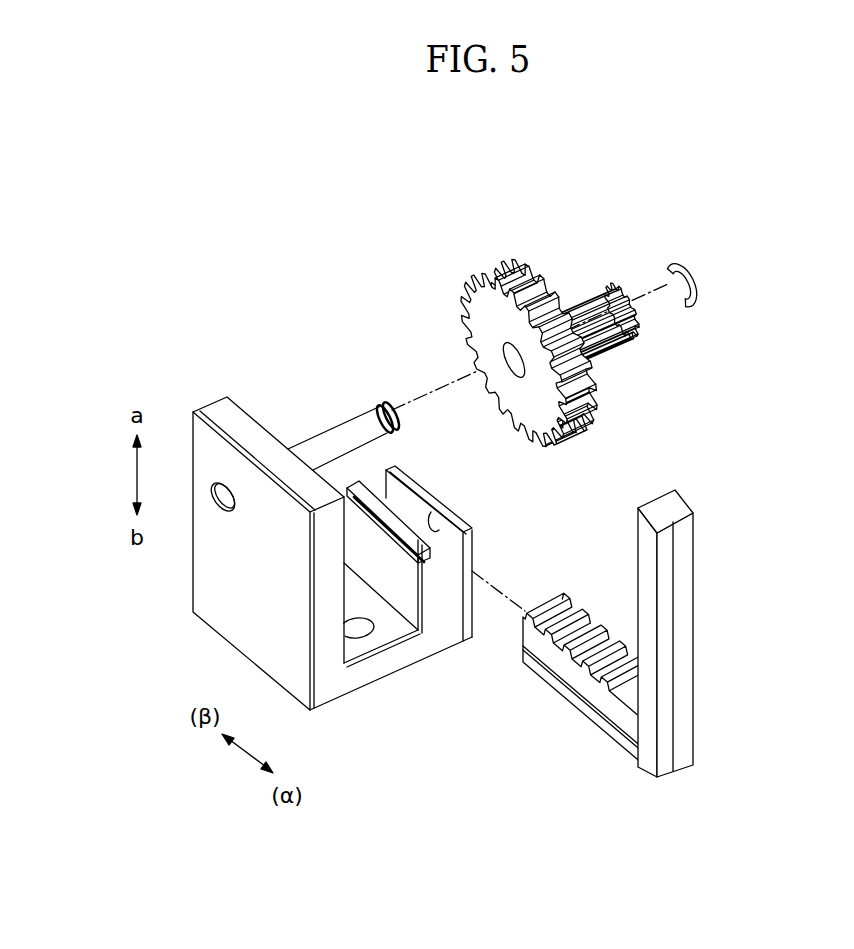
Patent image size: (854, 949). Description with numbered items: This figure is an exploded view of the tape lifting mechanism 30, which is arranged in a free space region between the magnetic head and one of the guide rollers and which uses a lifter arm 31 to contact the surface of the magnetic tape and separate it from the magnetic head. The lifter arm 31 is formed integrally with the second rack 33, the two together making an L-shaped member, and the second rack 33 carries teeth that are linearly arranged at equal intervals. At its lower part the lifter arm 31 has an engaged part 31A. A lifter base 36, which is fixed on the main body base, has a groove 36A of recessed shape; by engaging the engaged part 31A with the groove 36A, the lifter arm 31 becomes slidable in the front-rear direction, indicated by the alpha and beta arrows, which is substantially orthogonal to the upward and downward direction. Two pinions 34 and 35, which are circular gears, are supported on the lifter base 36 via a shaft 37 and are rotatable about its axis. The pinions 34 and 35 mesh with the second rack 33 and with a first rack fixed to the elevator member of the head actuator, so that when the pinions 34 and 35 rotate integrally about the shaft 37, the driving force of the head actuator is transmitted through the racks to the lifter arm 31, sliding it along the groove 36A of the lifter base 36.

The tape lifting mechanism 30 is at (177, 662).
The lifter arm 31 is at (683, 678).
The engaged part 31A is at (589, 728).
The second rack 33 is at (570, 598).
The pinion 34 is at (493, 310).
The pinion 35 is at (582, 298).
The lifter base 36 is at (245, 402).
The groove 36A is at (445, 518).
The shaft 37 is at (327, 430).